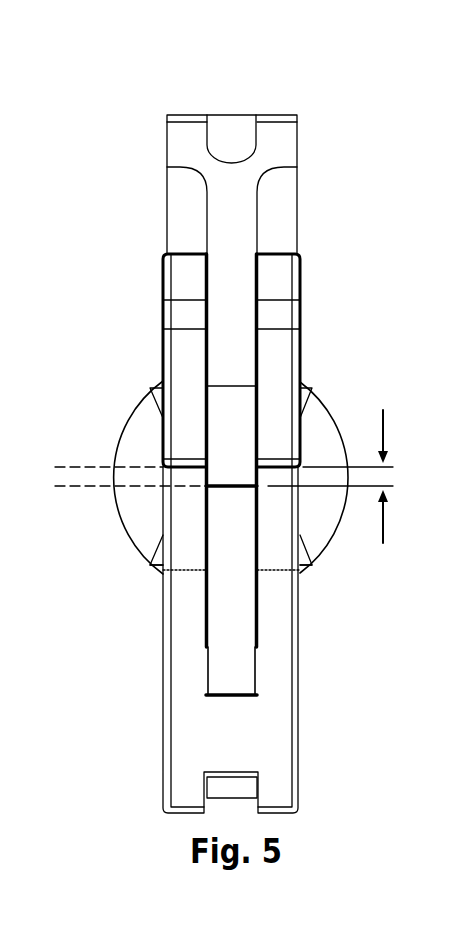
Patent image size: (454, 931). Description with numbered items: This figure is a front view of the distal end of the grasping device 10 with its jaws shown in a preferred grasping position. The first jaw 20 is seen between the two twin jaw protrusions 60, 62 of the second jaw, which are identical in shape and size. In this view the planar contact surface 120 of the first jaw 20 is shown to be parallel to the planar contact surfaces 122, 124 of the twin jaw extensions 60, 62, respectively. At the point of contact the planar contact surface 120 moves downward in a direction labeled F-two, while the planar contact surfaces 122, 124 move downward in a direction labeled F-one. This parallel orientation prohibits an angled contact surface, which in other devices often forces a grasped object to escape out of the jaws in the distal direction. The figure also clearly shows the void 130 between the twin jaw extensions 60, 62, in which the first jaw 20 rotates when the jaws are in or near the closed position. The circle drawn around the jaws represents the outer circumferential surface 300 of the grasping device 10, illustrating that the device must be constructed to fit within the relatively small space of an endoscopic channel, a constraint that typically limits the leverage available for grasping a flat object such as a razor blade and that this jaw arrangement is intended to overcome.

The grasping device 10 is at (220, 415).
The first jaw 20 is at (206, 658).
The twin jaw protrusion 60 is at (300, 282).
The twin jaw protrusion 62 is at (160, 286).
The planar contact surface 120 is at (222, 474).
The planar contact surface 122 is at (187, 468).
The planar contact surface 124 is at (277, 467).
The void 130 is at (229, 292).
The outer circumferential surface 300 is at (320, 395).